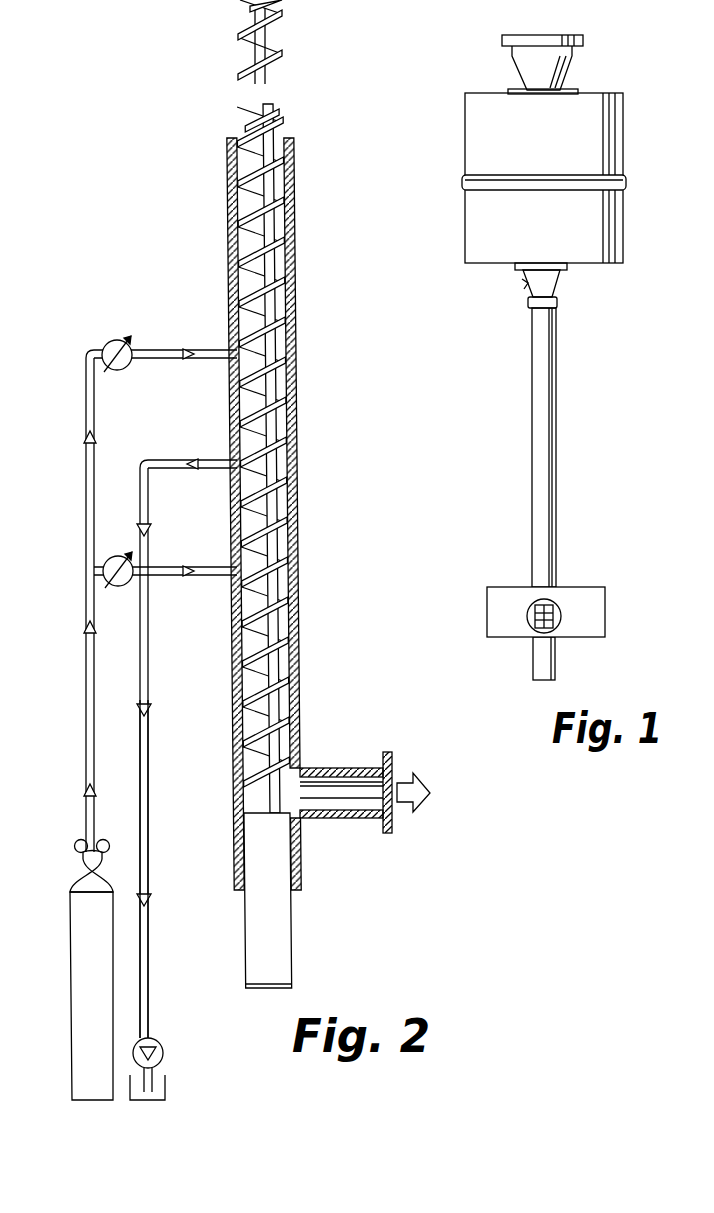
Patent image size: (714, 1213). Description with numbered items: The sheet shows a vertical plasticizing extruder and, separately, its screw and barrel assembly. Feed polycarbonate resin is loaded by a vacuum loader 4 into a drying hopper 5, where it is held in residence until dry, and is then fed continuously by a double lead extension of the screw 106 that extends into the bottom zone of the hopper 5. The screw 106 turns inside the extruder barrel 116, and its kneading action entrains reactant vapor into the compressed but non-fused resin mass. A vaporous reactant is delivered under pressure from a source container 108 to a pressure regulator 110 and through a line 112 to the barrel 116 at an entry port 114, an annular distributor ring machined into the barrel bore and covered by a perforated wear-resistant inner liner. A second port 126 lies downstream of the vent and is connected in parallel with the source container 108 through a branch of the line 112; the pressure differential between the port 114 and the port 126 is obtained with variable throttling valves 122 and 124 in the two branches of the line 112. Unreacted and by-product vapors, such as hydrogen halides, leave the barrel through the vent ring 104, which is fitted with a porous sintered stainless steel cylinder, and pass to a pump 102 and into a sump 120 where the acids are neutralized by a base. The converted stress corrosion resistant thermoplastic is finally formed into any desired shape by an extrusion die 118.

In FIG. 1, the vacuum loader 4 is at (526, 64).
In FIG. 1, the drying hopper 5 is at (485, 222).
In FIG. 2, the pump 102 is at (160, 1046).
In FIG. 2, the vent ring 104 is at (230, 462).
In FIG. 2, the screw 106 is at (292, 256).
In FIG. 2, the source container 108 is at (108, 985).
In FIG. 2, the pressure regulator 110 is at (78, 851).
In FIG. 2, the line 112 is at (86, 684).
In FIG. 2, the entry port 114 is at (229, 352).
In FIG. 2, the extruder barrel 116 is at (295, 382).
In FIG. 1, the extruder barrel 116 is at (553, 440).
In FIG. 1, the extrusion die 118 is at (556, 602).
In FIG. 2, the sump 120 is at (168, 1087).
In FIG. 2, the variable throttling valve 122 is at (113, 338).
In FIG. 2, the variable throttling valve 124 is at (130, 586).
In FIG. 2, the port 126 is at (237, 568).